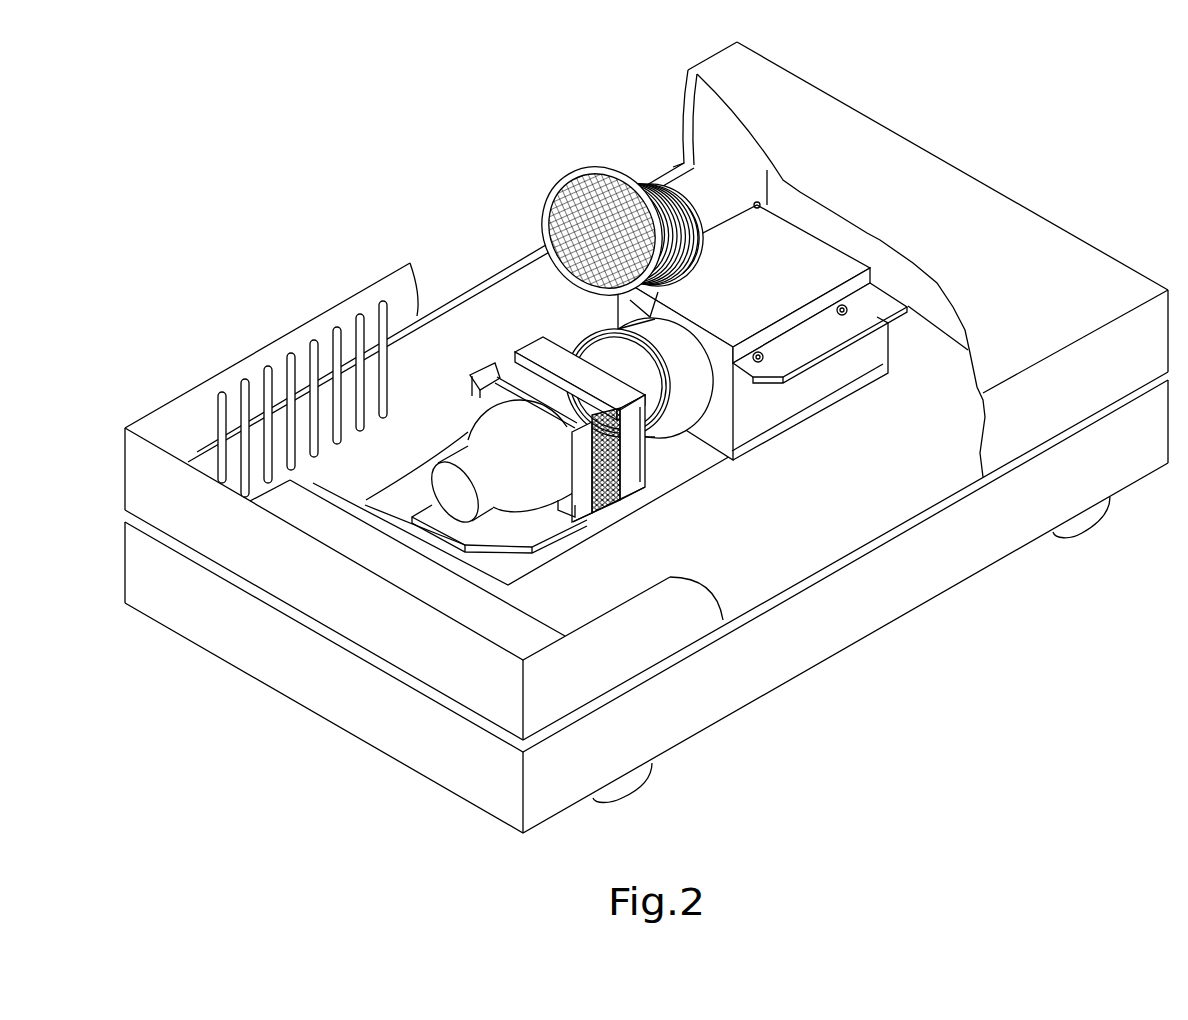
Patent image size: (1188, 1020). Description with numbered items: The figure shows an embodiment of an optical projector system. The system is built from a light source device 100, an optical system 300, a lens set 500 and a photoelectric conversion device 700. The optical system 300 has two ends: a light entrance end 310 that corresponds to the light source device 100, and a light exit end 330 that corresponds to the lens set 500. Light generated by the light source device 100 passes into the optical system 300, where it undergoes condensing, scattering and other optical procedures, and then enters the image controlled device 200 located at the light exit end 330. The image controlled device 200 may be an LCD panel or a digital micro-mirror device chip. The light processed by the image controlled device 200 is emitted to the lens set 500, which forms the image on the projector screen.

The light source device 100 is at (517, 425).
The image controlled device 200 is at (800, 255).
The optical system 300 is at (587, 343).
The light entrance end 310 is at (660, 443).
The light exit end 330 is at (610, 247).
The lens set 500 is at (598, 173).
The photoelectric conversion device 700 is at (557, 332).